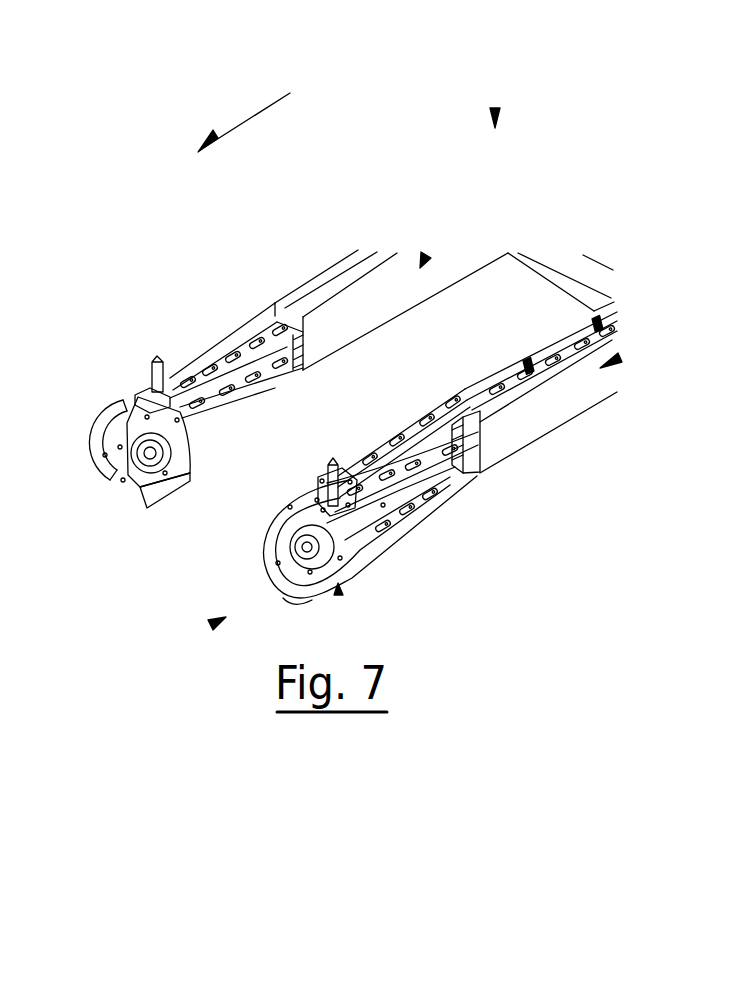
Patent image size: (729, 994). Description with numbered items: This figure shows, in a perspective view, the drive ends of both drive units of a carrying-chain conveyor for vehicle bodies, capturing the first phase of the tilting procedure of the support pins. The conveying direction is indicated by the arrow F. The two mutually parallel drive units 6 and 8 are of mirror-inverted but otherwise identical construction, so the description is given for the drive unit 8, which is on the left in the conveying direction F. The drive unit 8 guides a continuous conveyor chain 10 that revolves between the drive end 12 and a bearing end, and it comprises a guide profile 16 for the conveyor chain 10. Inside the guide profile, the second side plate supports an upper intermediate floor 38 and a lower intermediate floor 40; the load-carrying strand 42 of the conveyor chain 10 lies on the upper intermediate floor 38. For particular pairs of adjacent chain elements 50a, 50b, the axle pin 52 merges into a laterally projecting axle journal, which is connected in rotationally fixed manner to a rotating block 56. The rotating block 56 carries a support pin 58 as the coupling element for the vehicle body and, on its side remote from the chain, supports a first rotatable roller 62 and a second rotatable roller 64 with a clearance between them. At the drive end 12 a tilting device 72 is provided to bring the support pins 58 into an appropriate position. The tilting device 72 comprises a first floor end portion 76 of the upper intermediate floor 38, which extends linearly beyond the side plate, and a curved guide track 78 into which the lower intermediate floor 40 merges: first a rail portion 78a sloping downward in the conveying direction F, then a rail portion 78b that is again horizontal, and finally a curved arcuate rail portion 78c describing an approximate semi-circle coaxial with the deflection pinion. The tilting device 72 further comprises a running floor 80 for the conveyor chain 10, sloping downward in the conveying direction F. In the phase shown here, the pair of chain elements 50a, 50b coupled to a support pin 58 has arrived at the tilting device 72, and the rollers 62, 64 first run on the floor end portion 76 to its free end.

The conveying direction F is at (251, 115).
The drive unit 6 is at (424, 258).
The drive unit 8 is at (620, 358).
The conveyor chain 10 is at (532, 356).
The drive end 12 is at (495, 120).
The guide profile 16 is at (577, 392).
The upper intermediate floor 38 is at (458, 398).
The lower intermediate floor 40 is at (467, 476).
The load-carrying strand 42 is at (600, 292).
The chain element 50a is at (320, 500).
The chain element 50b is at (347, 466).
The axle pin 52 is at (268, 543).
The rotating block 56 is at (313, 527).
The support pin 58 is at (320, 468).
The first rotatable roller 62 is at (293, 530).
The second rotatable roller 64 is at (332, 458).
The tilting device 72 is at (218, 622).
The first floor end portion 76 is at (433, 418).
The curved guide track 78 is at (340, 593).
The rail portion 78a is at (428, 502).
The rail portion 78b is at (346, 579).
The curved arcuate rail portion 78c is at (262, 559).
The running floor 80 is at (287, 596).